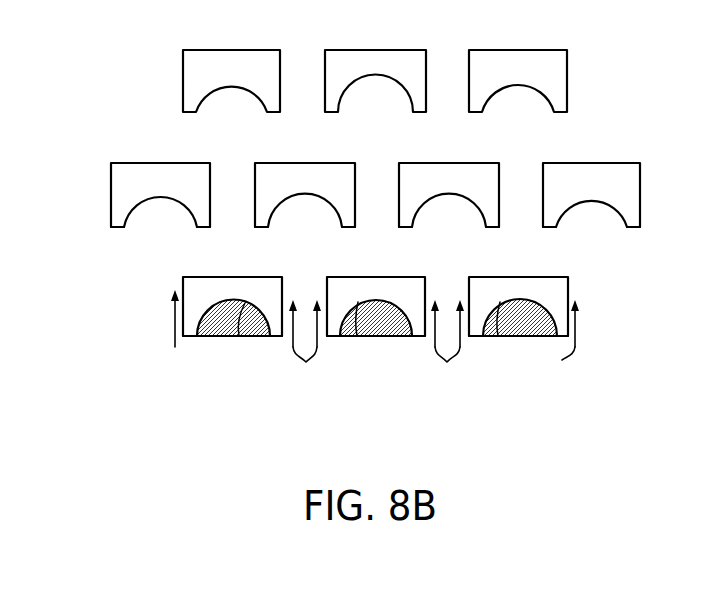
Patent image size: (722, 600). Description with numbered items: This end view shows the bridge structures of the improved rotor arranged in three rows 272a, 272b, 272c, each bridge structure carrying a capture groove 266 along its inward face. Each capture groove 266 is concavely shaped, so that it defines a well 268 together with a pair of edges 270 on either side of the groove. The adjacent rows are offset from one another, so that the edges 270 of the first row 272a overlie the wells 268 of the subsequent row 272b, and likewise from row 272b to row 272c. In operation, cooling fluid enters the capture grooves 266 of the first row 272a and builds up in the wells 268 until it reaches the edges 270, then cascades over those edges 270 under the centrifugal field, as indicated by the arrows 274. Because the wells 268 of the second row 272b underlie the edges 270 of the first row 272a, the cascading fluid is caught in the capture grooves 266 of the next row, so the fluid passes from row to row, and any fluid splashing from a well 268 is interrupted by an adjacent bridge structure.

The capture groove 266 is at (459, 200).
The well 268 is at (305, 198).
The edges 270 is at (210, 227).
The first row 272a is at (152, 305).
The second row 272b is at (90, 201).
The third row 272c is at (153, 69).
The arrows 274 is at (175, 347).